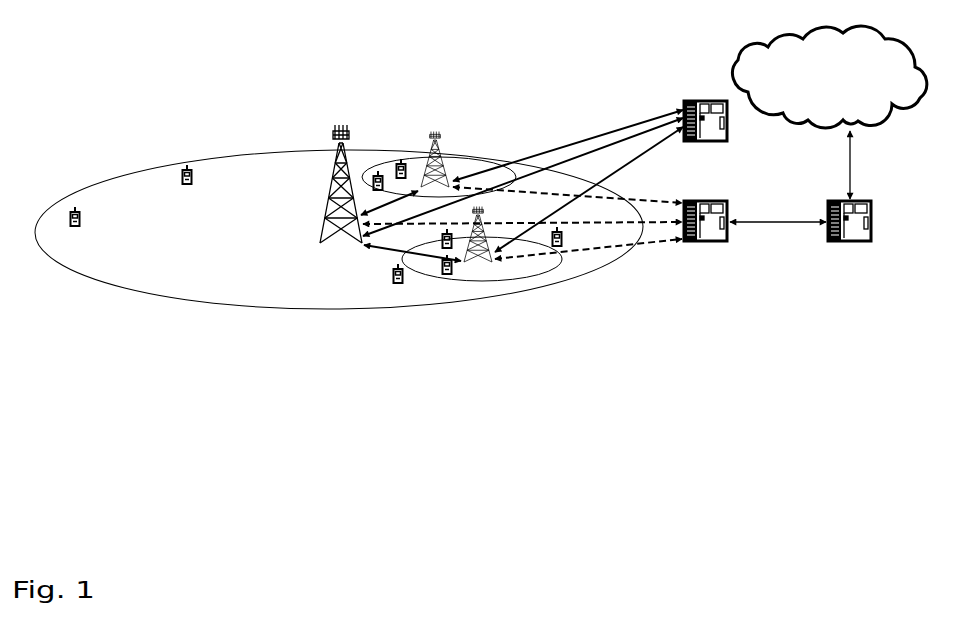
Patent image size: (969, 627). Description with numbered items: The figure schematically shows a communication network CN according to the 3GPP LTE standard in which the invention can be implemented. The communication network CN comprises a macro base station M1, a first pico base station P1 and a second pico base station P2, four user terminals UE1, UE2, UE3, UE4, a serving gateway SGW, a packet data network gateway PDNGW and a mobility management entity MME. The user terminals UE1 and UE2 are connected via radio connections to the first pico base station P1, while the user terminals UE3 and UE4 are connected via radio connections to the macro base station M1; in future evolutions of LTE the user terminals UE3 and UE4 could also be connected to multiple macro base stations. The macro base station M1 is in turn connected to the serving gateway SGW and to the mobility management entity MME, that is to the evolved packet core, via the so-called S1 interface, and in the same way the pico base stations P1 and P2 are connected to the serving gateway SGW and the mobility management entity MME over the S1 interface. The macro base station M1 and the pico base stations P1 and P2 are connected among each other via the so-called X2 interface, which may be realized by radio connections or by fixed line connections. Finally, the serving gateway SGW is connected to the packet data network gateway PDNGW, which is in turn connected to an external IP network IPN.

The communication network CN is at (339, 177).
The external IP network IPN is at (830, 77).
The mobility management entity MME is at (705, 132).
The serving gateway SGW is at (755, 234).
The packet data network gateway PDNGW is at (854, 199).
The macro base station M1 is at (341, 193).
The first pico base station P1 is at (482, 244).
The second pico base station P2 is at (439, 168).
The user terminal UE1 is at (432, 236).
The user terminal UE2 is at (434, 276).
The user terminal UE3 is at (394, 285).
The user terminal UE4 is at (573, 245).
The X2 interface X2 is at (411, 228).
The S1 interface S1 is at (523, 184).